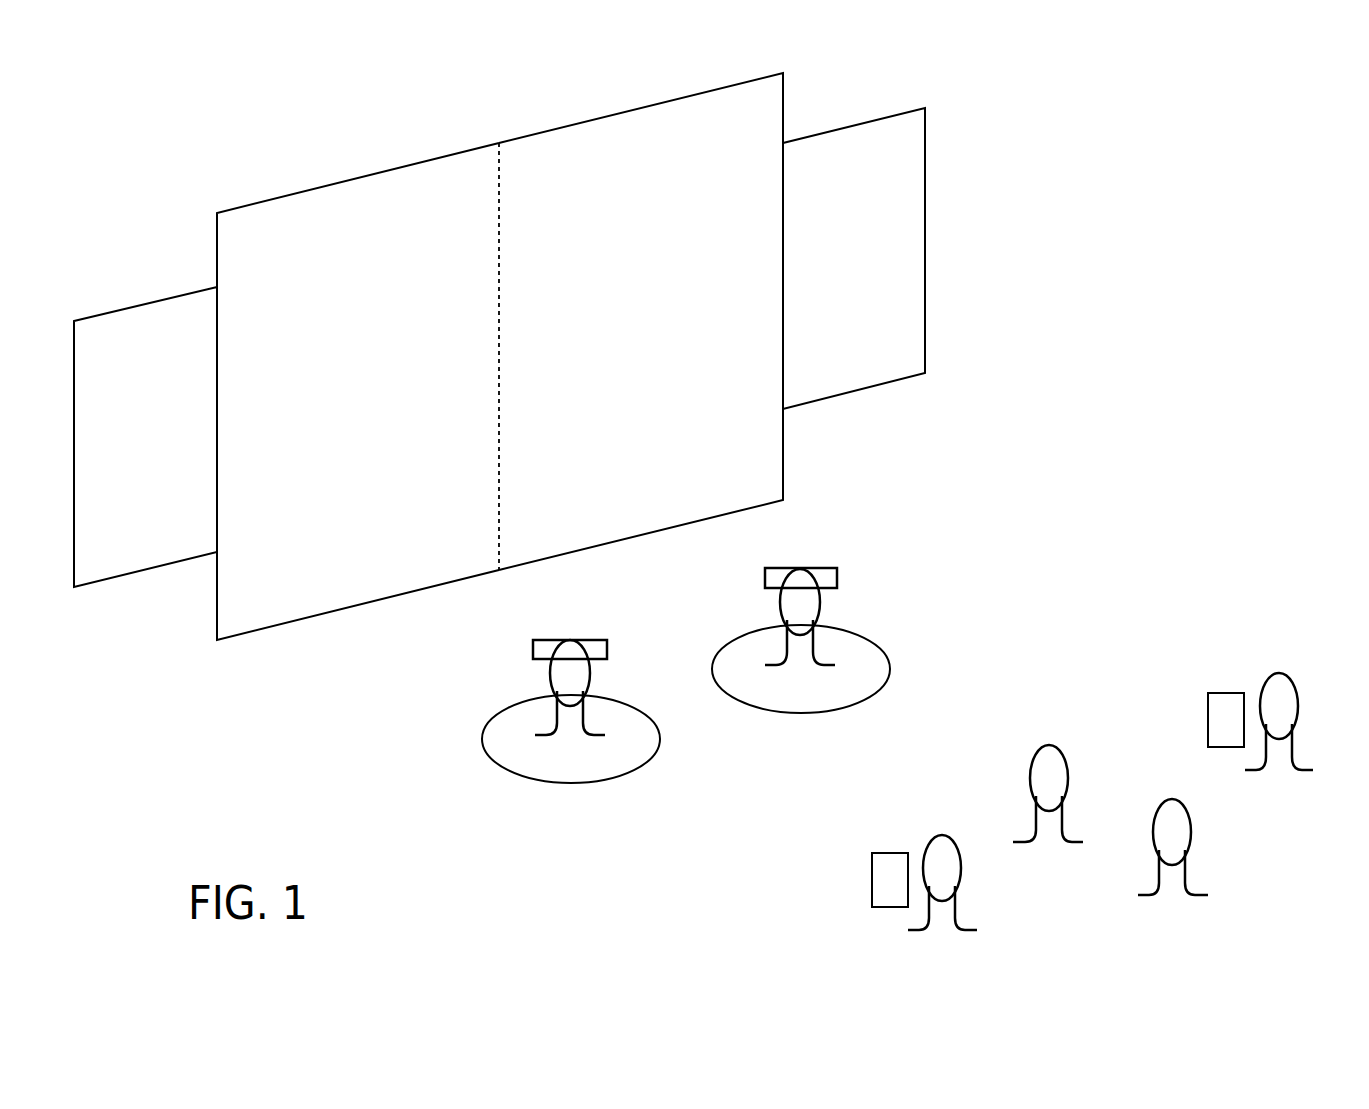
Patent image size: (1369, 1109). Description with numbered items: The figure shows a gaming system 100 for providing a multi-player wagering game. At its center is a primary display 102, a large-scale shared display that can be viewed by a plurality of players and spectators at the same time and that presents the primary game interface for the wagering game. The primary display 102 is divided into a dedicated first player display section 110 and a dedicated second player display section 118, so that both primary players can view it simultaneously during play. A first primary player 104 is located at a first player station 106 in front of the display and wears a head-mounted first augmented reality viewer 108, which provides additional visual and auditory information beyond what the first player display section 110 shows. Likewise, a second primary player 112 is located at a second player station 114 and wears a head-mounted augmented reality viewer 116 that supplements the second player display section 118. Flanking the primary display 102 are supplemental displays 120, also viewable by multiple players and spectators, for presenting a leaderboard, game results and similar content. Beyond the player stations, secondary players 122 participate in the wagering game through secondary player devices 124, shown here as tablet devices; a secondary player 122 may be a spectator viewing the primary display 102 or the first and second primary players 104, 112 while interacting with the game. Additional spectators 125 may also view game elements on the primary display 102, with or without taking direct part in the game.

The gaming system 100 is at (232, 138).
The primary display 102 is at (501, 133).
The first primary player 104 is at (550, 687).
The first player station 106 is at (493, 735).
The first augmented reality (AR) viewer 108 is at (530, 647).
The first player display section 110 is at (323, 618).
The second primary player 112 is at (828, 608).
The second player station 114 is at (883, 663).
The augmented reality (AR) viewer 116 is at (843, 578).
The second player display section 118 is at (670, 530).
The supplemental display 120 is at (128, 580).
The secondary player 122 is at (1277, 772).
The secondary player device 124 is at (1202, 688).
The spectator 125 is at (1075, 860).